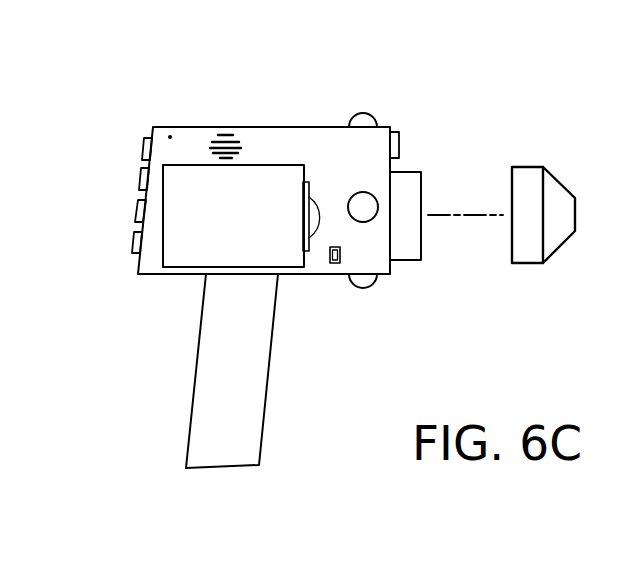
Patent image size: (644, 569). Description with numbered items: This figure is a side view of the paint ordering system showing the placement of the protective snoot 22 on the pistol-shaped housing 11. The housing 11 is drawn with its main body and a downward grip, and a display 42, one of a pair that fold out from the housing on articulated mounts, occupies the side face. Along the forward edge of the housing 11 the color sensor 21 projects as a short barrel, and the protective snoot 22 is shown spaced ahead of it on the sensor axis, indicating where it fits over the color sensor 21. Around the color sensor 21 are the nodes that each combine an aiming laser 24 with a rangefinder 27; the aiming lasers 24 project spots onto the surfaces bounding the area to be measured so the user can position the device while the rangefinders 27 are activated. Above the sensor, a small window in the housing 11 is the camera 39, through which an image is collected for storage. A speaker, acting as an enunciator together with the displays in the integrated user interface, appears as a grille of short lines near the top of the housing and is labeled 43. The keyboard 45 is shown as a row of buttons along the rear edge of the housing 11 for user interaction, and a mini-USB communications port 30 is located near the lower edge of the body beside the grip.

The housing 11 is at (157, 275).
The color sensor 21 is at (421, 198).
The protective snoot 22 is at (577, 196).
The aiming laser 24 is at (369, 171).
The rangefinder 27 is at (375, 117).
The communications port 30 is at (337, 264).
The camera 39 is at (399, 148).
The display 42 is at (265, 227).
The speaker 43 is at (230, 127).
The keyboard 45 is at (137, 205).